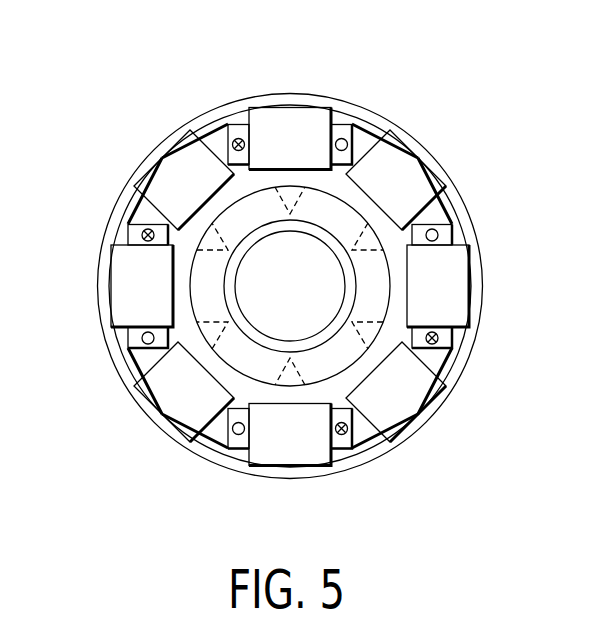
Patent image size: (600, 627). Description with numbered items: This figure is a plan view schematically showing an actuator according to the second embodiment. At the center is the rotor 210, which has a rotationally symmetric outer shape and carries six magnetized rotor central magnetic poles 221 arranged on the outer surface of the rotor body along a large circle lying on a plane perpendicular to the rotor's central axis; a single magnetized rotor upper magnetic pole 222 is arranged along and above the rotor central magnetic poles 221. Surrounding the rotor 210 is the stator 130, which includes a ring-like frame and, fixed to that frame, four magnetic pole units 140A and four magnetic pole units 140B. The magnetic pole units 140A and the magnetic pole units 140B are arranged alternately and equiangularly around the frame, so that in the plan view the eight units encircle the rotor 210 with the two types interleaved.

The stator 130 is at (209, 105).
The magnetic pole units 140A is at (297, 140).
The magnetic pole units 140B is at (166, 181).
The rotor 210 is at (358, 218).
The rotor central magnetic poles 221 is at (366, 344).
The rotor upper magnetic pole 222 is at (380, 234).